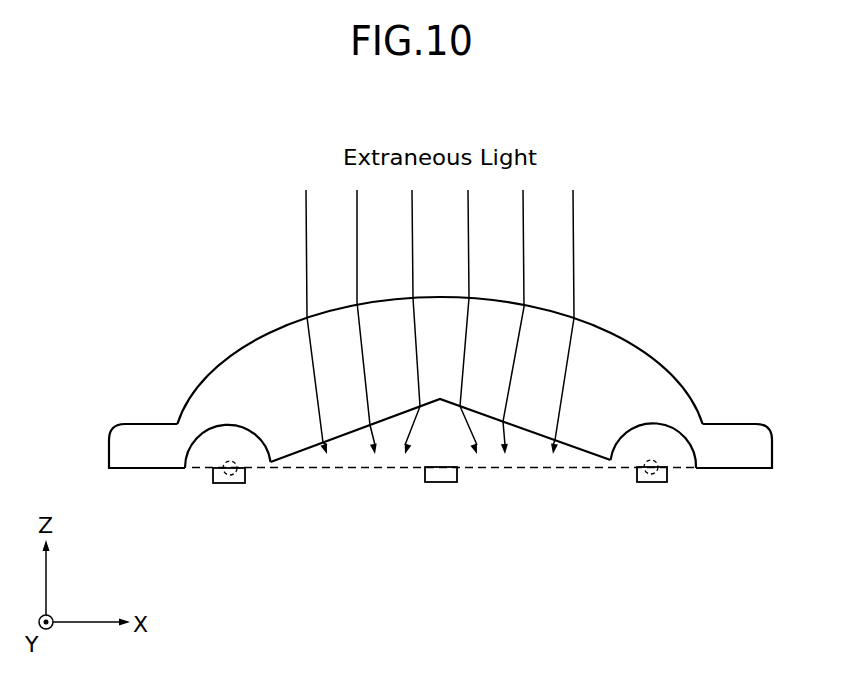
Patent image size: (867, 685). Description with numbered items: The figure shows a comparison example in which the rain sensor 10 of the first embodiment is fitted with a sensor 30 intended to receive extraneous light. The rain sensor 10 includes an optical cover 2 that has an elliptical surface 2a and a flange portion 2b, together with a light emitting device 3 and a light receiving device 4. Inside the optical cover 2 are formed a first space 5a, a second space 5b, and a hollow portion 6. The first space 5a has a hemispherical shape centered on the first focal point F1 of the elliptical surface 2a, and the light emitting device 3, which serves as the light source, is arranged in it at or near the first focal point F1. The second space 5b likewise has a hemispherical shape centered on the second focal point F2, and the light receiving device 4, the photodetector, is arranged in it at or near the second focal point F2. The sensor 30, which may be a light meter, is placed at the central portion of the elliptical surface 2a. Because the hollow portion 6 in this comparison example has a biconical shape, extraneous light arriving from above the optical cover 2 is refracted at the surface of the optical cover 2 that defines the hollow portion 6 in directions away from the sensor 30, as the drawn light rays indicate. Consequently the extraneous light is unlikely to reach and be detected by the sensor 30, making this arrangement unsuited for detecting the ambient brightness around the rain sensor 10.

The rain sensor 10 is at (190, 272).
The optical cover 2 is at (643, 367).
The elliptical surface 2a is at (338, 310).
The flange portion 2b is at (738, 432).
The light emitting device 3 is at (220, 483).
The light receiving device 4 is at (660, 482).
The first space 5a is at (207, 455).
The second space 5b is at (675, 452).
The hollow portion 6 is at (442, 445).
The sensor 30 is at (442, 481).
The first focal point F1 is at (245, 484).
The second focal point F2 is at (637, 483).